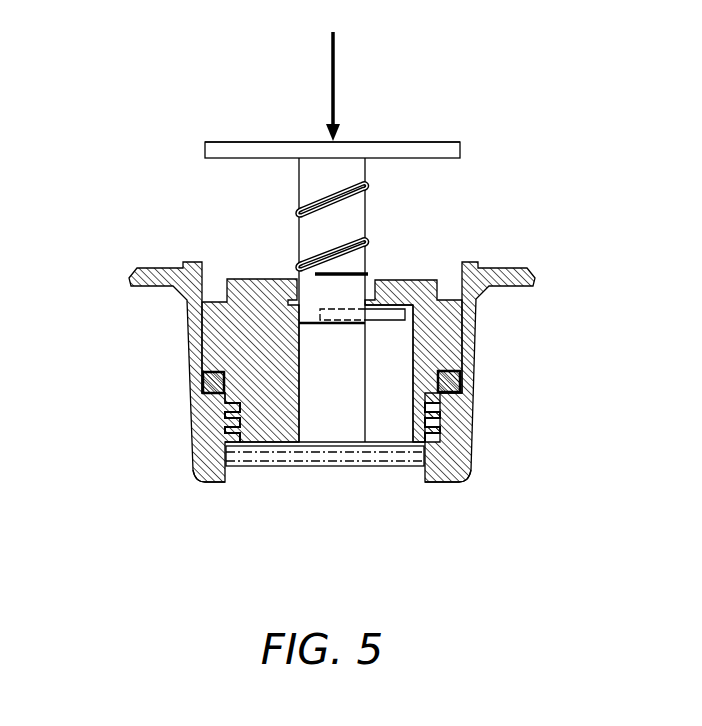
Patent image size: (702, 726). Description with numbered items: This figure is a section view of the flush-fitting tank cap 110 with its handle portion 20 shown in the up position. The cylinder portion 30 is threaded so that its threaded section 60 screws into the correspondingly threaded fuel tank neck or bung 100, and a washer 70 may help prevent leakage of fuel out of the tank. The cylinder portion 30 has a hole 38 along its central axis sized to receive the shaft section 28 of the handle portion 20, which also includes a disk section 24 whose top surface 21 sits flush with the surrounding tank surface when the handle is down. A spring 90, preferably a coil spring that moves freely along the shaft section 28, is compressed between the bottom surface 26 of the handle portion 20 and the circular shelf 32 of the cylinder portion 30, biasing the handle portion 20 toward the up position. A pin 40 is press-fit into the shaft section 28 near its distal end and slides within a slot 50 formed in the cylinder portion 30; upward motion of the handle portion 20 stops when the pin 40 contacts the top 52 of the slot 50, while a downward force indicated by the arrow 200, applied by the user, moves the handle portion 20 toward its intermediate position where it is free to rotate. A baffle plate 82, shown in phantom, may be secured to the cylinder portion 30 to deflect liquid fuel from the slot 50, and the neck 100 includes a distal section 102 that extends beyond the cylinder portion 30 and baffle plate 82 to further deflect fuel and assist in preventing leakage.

The arrow 200 is at (335, 73).
The handle portion 20 is at (385, 295).
The top surface 21 is at (443, 141).
The disk section 24 is at (462, 148).
The tank cap 110 is at (300, 303).
The bottom surface 26 is at (274, 162).
The spring 90 is at (364, 223).
The shaft section 28 is at (345, 230).
The circular shelf 32 is at (297, 271).
The washer 70 is at (204, 382).
The fuel tank neck or bung 100 is at (478, 404).
The distal section 102 is at (205, 478).
The threaded section 60 is at (238, 441).
The baffle plate 82 is at (268, 456).
The hole 38 is at (305, 410).
The pin 40 is at (375, 332).
The top of the slot 52 is at (412, 337).
The slot 50 is at (405, 455).
The cylinder portion 30 is at (398, 423).